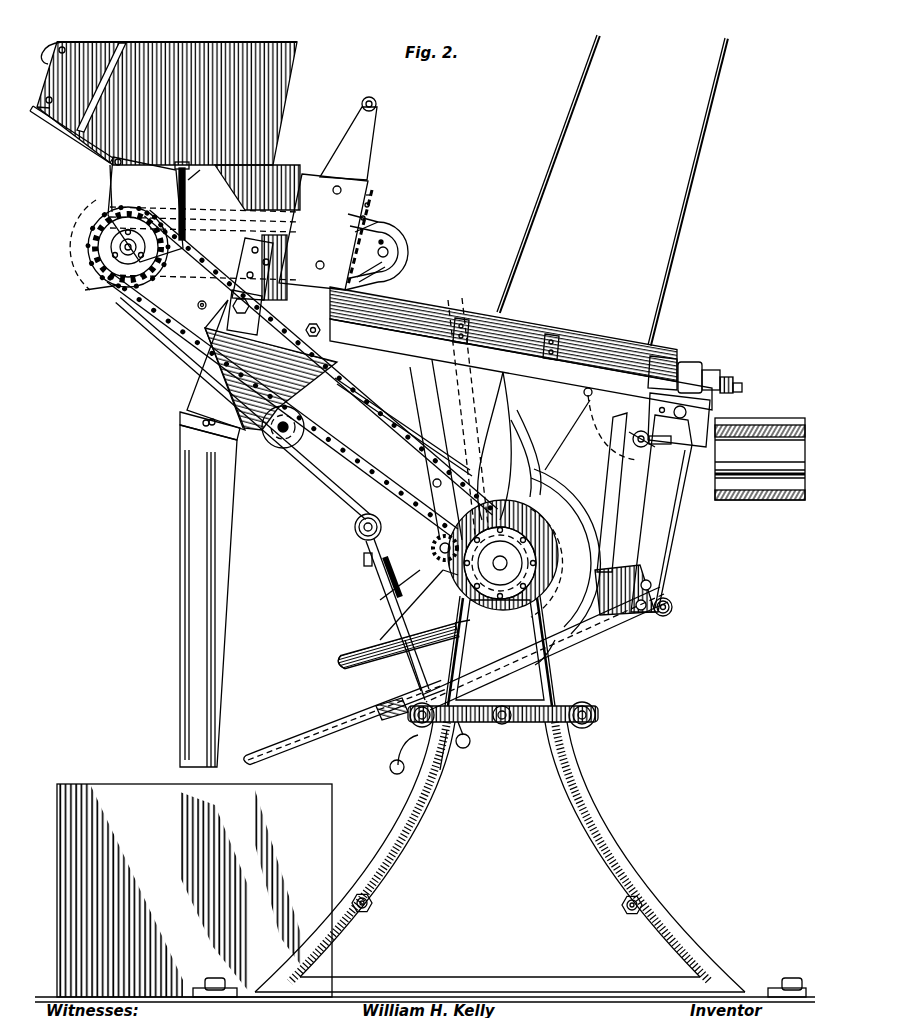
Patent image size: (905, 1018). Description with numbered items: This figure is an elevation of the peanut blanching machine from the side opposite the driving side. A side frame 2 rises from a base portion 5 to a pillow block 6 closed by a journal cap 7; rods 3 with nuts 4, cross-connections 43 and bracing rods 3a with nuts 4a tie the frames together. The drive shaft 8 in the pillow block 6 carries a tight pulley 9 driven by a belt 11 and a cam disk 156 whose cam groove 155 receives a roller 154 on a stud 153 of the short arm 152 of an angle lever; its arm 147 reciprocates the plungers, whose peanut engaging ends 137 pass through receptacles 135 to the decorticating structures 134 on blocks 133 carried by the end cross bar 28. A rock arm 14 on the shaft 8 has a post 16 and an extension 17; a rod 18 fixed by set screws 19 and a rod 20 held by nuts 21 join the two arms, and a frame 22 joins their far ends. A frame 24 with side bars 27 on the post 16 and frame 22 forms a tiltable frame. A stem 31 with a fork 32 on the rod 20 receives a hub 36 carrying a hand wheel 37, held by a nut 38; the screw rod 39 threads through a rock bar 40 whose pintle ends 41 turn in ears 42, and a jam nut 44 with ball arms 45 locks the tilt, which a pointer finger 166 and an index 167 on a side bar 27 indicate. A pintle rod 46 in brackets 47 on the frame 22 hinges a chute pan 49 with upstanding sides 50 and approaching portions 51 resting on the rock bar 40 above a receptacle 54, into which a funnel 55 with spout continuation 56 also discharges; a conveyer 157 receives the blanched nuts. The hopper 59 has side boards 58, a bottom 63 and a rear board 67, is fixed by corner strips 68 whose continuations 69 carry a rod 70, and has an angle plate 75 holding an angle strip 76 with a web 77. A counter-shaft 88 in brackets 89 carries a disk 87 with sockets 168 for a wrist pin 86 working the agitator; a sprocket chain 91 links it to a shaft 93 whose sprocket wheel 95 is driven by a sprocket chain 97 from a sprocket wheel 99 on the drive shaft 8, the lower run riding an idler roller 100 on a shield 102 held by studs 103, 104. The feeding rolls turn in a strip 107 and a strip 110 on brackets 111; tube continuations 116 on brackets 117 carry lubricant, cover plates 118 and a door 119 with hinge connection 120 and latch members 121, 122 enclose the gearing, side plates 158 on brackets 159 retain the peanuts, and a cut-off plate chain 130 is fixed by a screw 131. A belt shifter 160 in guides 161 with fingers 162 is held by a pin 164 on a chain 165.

The side frame 2 is at (618, 852).
The rod 3 is at (372, 901).
The nut 4 is at (370, 908).
The base portion 5 is at (495, 977).
The pillow block 6 is at (556, 600).
The journal cap 7 is at (594, 536).
The drive shaft 8 is at (503, 570).
The tight pulley 9 is at (448, 641).
The belt 11 is at (537, 212).
The rock arm 14 is at (625, 590).
The post 16 is at (442, 408).
The extension 17 is at (282, 405).
The rod 18 is at (440, 538).
The set screw 19 is at (408, 605).
The rod 20 is at (366, 516).
The nut 21 is at (358, 527).
The frame 22 is at (668, 515).
The frame 24 is at (418, 378).
The side bar 27 is at (170, 340).
The end cross bar 28 is at (710, 412).
The stem 31 is at (384, 588).
The fork 32 is at (384, 572).
The hub 36 is at (340, 660).
The hand wheel 37 is at (340, 667).
The nut 38 is at (363, 559).
The screw rod 39 is at (410, 656).
The rock bar 40 is at (405, 735).
The pintle end 41 is at (416, 718).
The ear 42 is at (436, 712).
The cross-connection 43 is at (500, 650).
The jam nut 44 is at (389, 762).
The ball arm 45 is at (463, 749).
The pintle rod 46 is at (670, 605).
The bracket 47 is at (673, 608).
The chute pan 49 is at (610, 628).
The upstanding side 50 is at (612, 640).
The approaching portion 51 is at (276, 756).
The receptacle 54 is at (194, 890).
The funnel 55 is at (258, 365).
The spout continuation 56 is at (182, 520).
The side board 58 is at (168, 126).
The hopper 59 is at (184, 41).
The bottom 63 is at (90, 146).
The board 67 is at (48, 48).
The corner strip 68 is at (308, 317).
The upstanding continuation 69 is at (345, 152).
The rod 70 is at (362, 106).
The angle plate 75 is at (323, 232).
The angle strip 76 is at (369, 194).
The web 77 is at (370, 188).
The wrist pin 86 is at (382, 268).
The disk 87 is at (390, 253).
The counter-shaft 88 is at (386, 243).
The bracket 89 is at (366, 235).
The sprocket chain 91 is at (392, 228).
The shaft 93 is at (110, 247).
The sprocket wheel 95 is at (112, 253).
The sprocket chain 97 is at (372, 406).
The sprocket wheel 99 is at (500, 563).
The idler roller 100 is at (280, 442).
The shield 102 is at (100, 220).
The stud 103 is at (432, 483).
The stud 104 is at (198, 304).
The plate or strip 107 is at (239, 269).
The plate-like strip 110 is at (682, 393).
The bracket 111 is at (661, 356).
The upstanding continuation 116 is at (176, 167).
The bracket 117 is at (189, 180).
The cover plate 118 is at (145, 209).
The door 119 is at (111, 180).
The hinge connection 120 is at (115, 164).
The latch member 121 is at (85, 290).
The latch member 122 is at (40, 108).
The chain 130 is at (366, 216).
The screw 131 is at (370, 203).
The block 133 is at (714, 372).
The skinning or decorticating structure 134 is at (728, 377).
The receptacle 135 is at (692, 362).
The peanut engaging end 137 is at (742, 388).
The arm 147 is at (512, 413).
The arm 152 is at (380, 602).
The stud 153 is at (560, 636).
The roller 154 is at (568, 640).
The cam groove 155 is at (556, 632).
The cam disk 156 is at (560, 532).
The conveyer 157 is at (792, 500).
The side plate 158 is at (433, 310).
The bracket 159 is at (460, 318).
The belt shifter 160 is at (656, 452).
The guide 161 is at (641, 450).
The finger 162 is at (567, 435).
The pin 164 is at (672, 447).
The chain 165 is at (598, 442).
The pointer finger 166 is at (507, 426).
The index 167 is at (550, 334).
The socket 168 is at (406, 238).
The rod 3a is at (506, 724).
The nut 4a is at (572, 724).